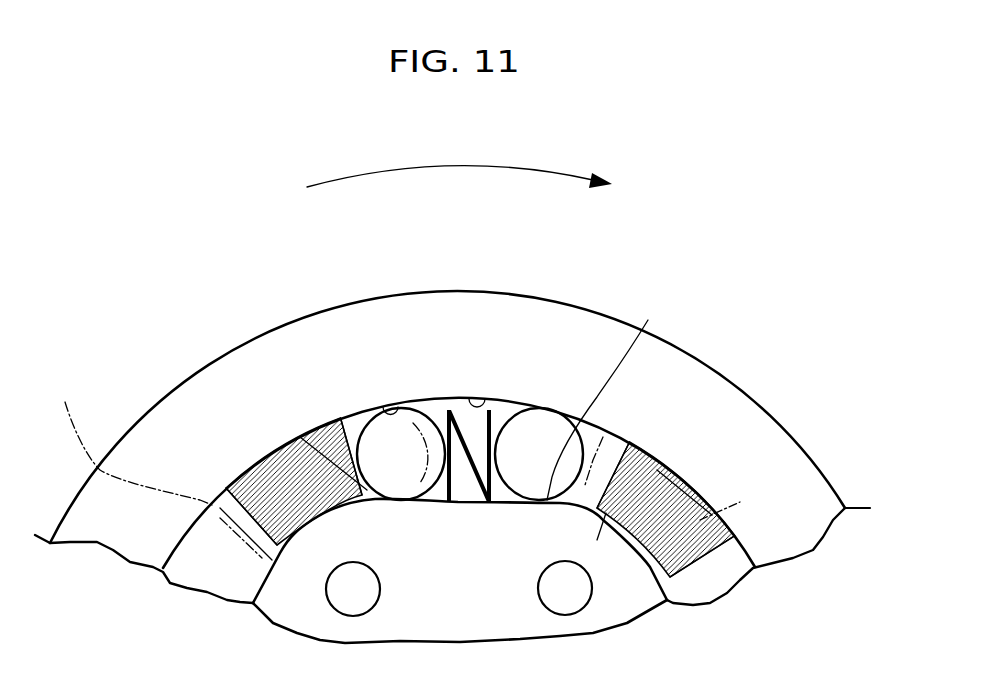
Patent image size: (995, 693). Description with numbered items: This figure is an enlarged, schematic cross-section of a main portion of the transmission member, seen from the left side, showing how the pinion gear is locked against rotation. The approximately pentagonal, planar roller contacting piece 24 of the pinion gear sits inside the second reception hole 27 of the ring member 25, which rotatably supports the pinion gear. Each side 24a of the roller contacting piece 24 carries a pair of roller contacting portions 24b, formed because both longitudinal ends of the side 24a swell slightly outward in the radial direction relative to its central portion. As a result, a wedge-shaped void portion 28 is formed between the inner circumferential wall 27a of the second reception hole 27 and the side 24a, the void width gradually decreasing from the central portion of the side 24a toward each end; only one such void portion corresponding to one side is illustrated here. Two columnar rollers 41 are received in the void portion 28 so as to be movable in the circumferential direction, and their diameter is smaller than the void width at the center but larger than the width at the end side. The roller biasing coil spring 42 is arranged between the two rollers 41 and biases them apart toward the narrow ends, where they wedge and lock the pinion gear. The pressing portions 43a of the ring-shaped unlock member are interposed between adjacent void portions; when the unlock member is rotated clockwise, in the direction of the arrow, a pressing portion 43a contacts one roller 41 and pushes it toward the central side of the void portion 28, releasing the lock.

The roller contacting piece 24 is at (693, 453).
The side 24a is at (213, 507).
The roller contacting portion 24b is at (268, 482).
The ring member 25 is at (462, 287).
The second reception hole 27 is at (385, 408).
The inner circumferential wall 27a is at (497, 475).
The wedge-shaped void portion 28 is at (640, 450).
The roller 41 is at (330, 410).
The roller biasing coil spring 42 is at (450, 410).
The pressing portion 43a is at (835, 400).